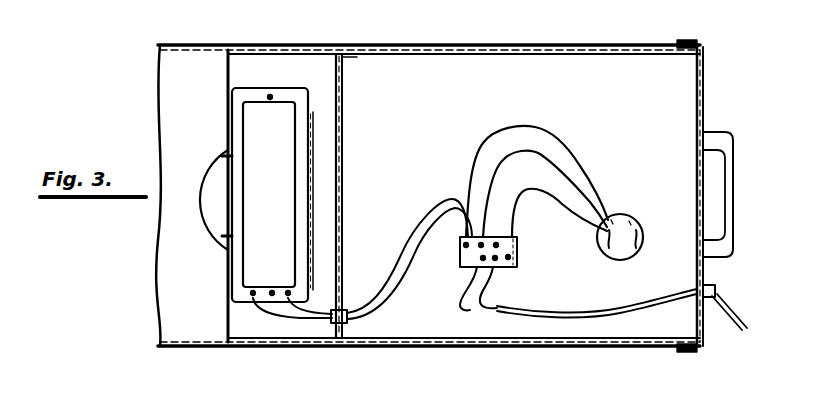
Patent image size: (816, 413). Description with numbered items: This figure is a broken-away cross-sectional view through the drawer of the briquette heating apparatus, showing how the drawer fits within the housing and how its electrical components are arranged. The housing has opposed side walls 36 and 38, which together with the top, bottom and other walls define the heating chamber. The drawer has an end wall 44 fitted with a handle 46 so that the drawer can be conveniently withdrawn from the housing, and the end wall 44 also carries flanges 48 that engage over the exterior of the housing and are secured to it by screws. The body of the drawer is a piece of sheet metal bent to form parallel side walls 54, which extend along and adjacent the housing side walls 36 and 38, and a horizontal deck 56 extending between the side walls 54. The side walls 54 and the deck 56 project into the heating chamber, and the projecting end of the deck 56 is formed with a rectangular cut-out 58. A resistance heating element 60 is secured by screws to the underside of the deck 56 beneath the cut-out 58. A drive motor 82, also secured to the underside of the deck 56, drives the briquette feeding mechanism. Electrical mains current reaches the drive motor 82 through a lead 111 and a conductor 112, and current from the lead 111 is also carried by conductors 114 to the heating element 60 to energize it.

The side wall 36 is at (199, 45).
The side wall 38 is at (188, 347).
The end wall 44 is at (705, 97).
The handle 46 is at (735, 199).
The flanges 48 is at (690, 40).
The side walls 54 is at (426, 45).
The horizontal deck 56 is at (243, 75).
The rectangular cut-out 58 is at (233, 113).
The resistance heating element 60 is at (260, 252).
The drive motor 82 is at (633, 216).
The lead 111 is at (610, 308).
The conductor 112 is at (567, 207).
The conductors 114 is at (421, 221).